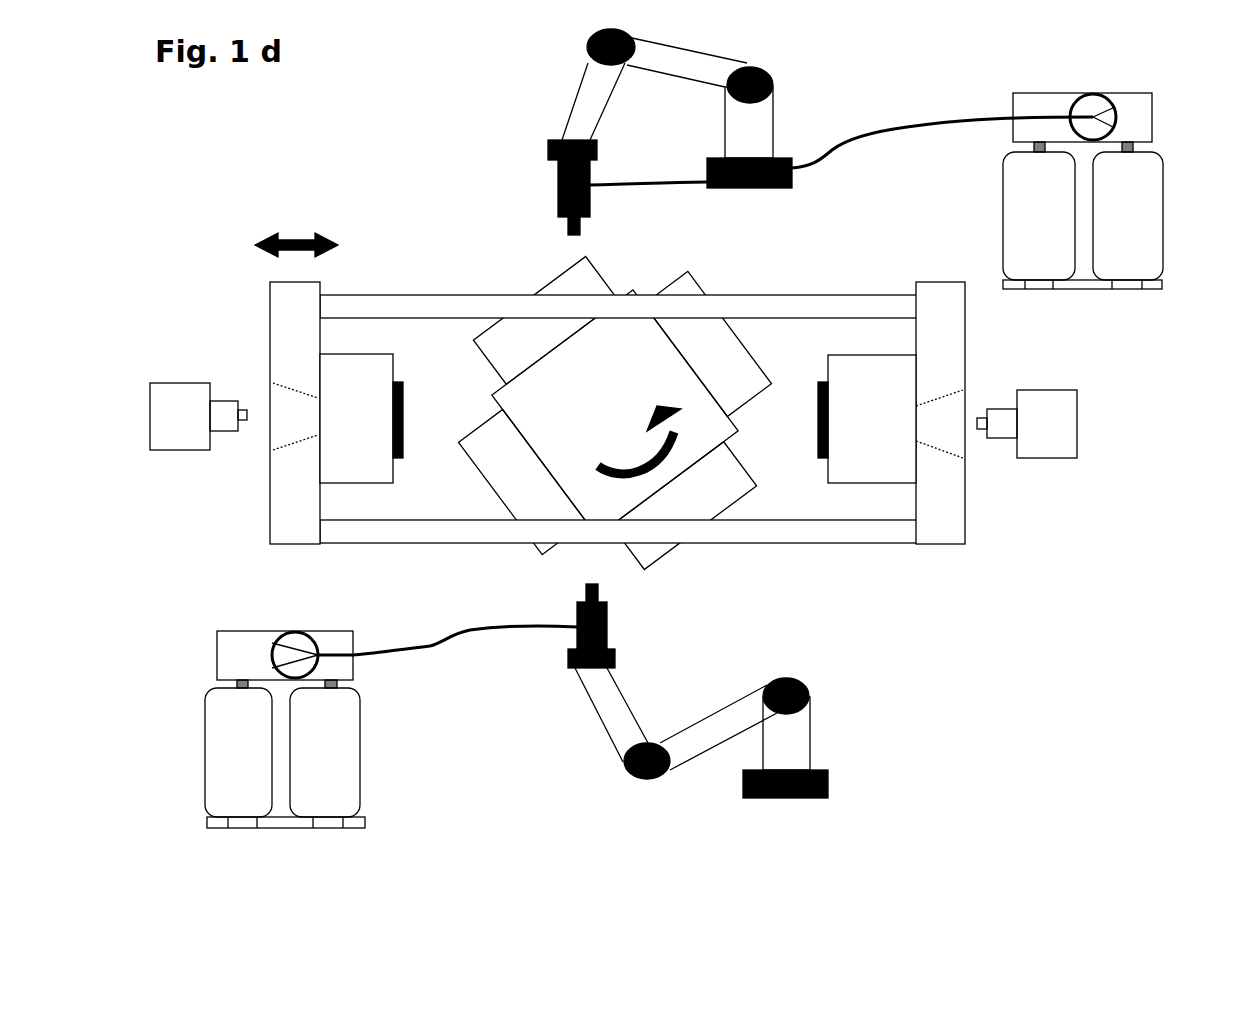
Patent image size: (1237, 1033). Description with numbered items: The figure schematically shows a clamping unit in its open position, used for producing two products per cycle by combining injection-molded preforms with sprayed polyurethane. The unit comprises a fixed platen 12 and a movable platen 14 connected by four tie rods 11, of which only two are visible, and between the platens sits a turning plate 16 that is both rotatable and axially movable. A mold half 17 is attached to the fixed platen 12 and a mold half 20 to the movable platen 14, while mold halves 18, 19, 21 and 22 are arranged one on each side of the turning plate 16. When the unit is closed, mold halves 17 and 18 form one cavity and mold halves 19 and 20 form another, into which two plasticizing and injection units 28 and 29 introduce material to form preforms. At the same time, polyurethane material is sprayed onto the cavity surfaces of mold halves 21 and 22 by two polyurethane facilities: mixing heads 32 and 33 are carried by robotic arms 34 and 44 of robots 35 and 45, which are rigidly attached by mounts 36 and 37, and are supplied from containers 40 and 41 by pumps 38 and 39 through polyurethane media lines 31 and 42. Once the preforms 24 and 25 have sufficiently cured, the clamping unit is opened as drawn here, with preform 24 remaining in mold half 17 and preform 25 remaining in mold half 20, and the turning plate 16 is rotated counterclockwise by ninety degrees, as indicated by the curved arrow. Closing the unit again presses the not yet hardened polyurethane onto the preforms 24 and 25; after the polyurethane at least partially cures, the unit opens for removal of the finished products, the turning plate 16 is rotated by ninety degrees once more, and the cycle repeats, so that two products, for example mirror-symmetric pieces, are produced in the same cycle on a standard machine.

The tie rods 11 is at (829, 528).
The fixed platen 12 is at (950, 528).
The movable platen 14 is at (283, 337).
The turning plate 16 is at (587, 492).
The mold half 17 is at (872, 419).
The mold half 18 is at (708, 343).
The mold half 19 is at (523, 481).
The mold half 20 is at (356, 418).
The mold half 21 is at (545, 321).
The mold half 22 is at (683, 506).
The preform 24 is at (818, 397).
The preform 25 is at (402, 383).
The plasticizing and injection unit 28 is at (1060, 447).
The plasticizing and injection unit 29 is at (182, 438).
The polyurethane media line 31 is at (398, 653).
The mixing head 32 is at (577, 632).
The mixing head 33 is at (558, 163).
The robotic arm 34 is at (603, 695).
The robot 35 is at (790, 733).
The mount 36 is at (807, 692).
The mount 37 is at (770, 73).
The pump 38 is at (290, 638).
The pump 39 is at (1088, 102).
The container 40 is at (255, 760).
The container 41 is at (1052, 223).
The polyurethane media line 42 is at (912, 135).
The robotic arm 44 is at (587, 103).
The robot 45 is at (763, 122).